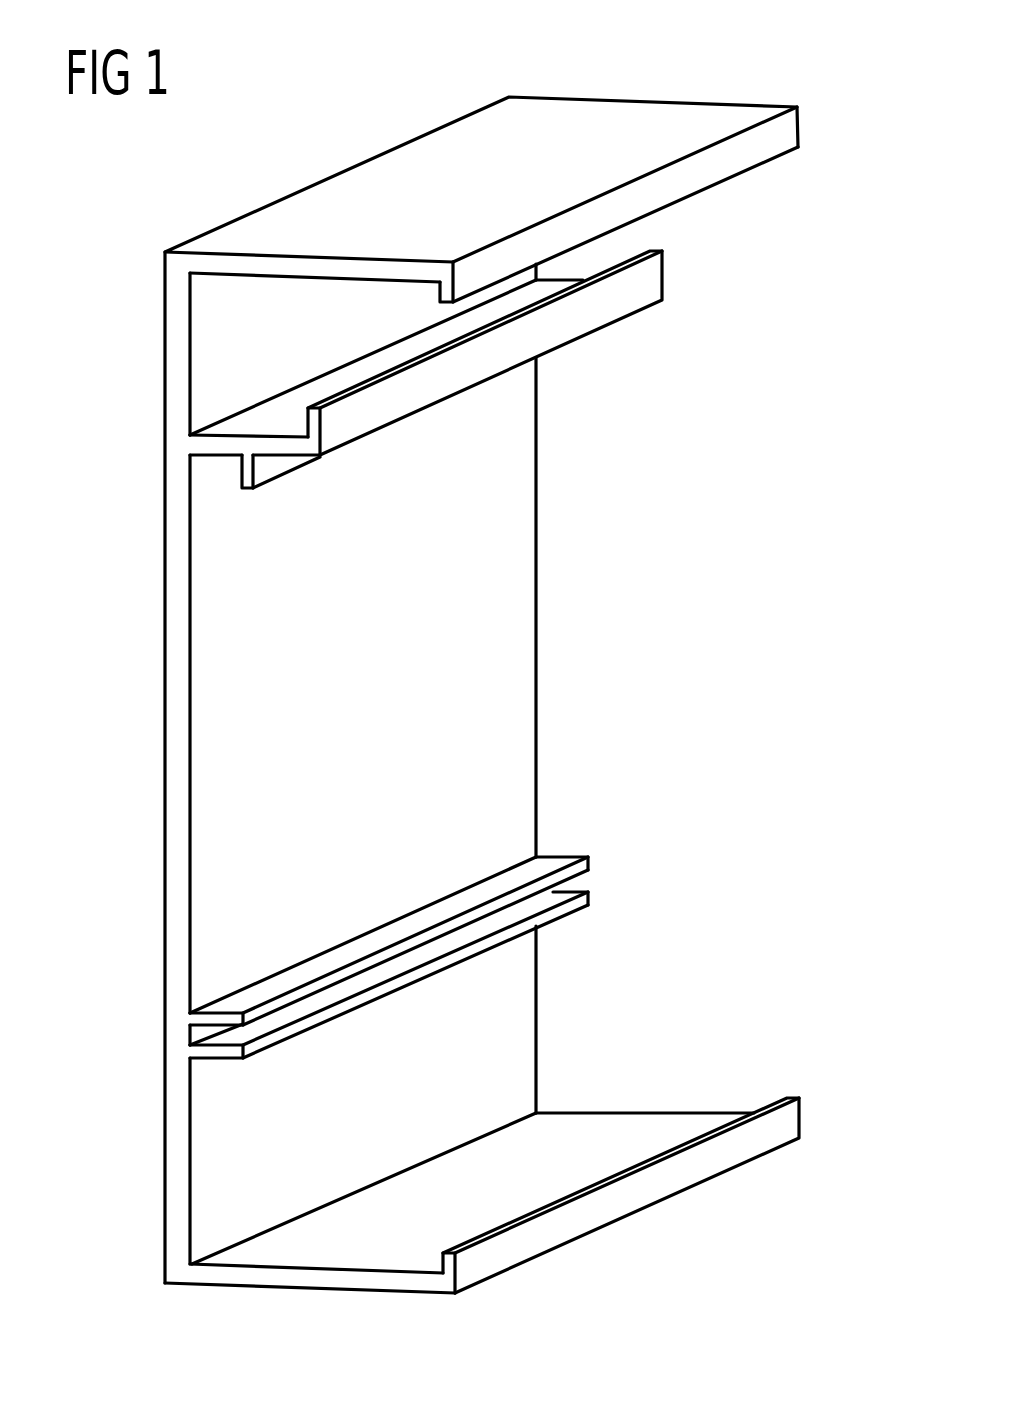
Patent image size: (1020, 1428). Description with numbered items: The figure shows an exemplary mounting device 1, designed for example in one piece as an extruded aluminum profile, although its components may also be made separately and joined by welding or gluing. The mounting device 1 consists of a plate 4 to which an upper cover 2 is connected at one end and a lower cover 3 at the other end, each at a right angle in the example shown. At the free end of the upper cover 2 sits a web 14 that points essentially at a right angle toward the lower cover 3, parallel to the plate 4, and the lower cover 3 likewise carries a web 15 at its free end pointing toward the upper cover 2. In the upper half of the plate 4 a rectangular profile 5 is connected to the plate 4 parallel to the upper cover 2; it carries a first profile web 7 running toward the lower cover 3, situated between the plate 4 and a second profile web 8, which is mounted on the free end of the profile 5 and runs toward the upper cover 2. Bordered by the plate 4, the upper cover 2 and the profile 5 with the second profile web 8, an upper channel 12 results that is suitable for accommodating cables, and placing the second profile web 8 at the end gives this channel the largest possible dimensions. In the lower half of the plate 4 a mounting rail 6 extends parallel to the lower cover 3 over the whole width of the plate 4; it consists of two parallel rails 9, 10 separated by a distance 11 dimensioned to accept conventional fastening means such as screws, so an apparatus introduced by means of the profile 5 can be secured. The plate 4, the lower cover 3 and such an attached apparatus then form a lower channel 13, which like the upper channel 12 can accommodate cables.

The mounting device 1 is at (331, 158).
The upper cover 2 is at (626, 118).
The lower cover 3 is at (353, 1243).
The plate 4 is at (262, 680).
The profile 5 is at (210, 441).
The mounting rail 6 is at (596, 853).
The first profile web 7 is at (248, 474).
The second profile web 8 is at (313, 418).
The rail 9 is at (220, 1018).
The rail 10 is at (225, 1052).
The distance 11 is at (373, 980).
The upper channel 12 is at (225, 313).
The lower channel 13 is at (225, 1155).
The web 14 is at (478, 292).
The web 15 is at (456, 1262).